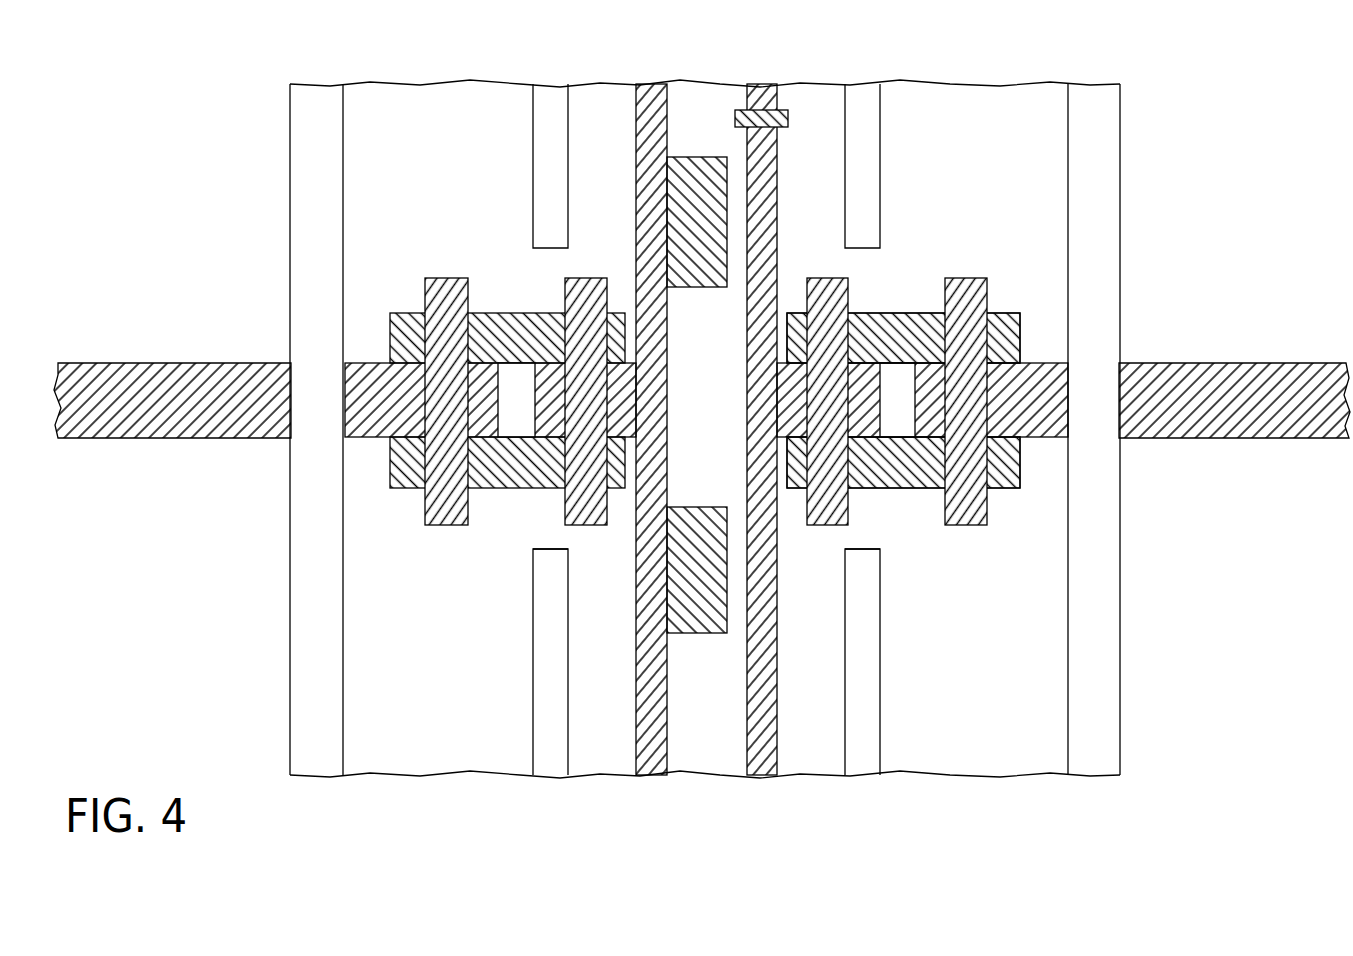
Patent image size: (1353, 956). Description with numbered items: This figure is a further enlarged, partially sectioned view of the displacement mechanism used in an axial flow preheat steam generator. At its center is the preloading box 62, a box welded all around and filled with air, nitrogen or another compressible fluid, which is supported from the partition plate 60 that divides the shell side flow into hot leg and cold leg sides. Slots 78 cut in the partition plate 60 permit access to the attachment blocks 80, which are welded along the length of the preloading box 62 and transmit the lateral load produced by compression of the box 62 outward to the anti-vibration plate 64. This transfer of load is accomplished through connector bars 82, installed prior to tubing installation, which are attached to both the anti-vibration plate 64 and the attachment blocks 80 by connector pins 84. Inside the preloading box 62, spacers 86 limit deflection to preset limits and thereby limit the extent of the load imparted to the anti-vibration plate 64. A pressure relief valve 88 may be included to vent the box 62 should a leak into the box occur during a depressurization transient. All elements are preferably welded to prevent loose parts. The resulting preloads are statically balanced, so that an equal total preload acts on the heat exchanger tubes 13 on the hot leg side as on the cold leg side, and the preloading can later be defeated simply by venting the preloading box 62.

The heat exchanger tubes 13 is at (290, 658).
The partition plate 60 is at (533, 158).
The preloading box 62 is at (636, 745).
The anti-vibration plate 64 is at (160, 363).
The slots 78 is at (548, 533).
The attachment blocks 80 is at (865, 432).
The connector bars 82 is at (400, 313).
The connector pins 84 is at (432, 278).
The spacers 86 is at (702, 157).
The pressure relief valve 88 is at (788, 110).